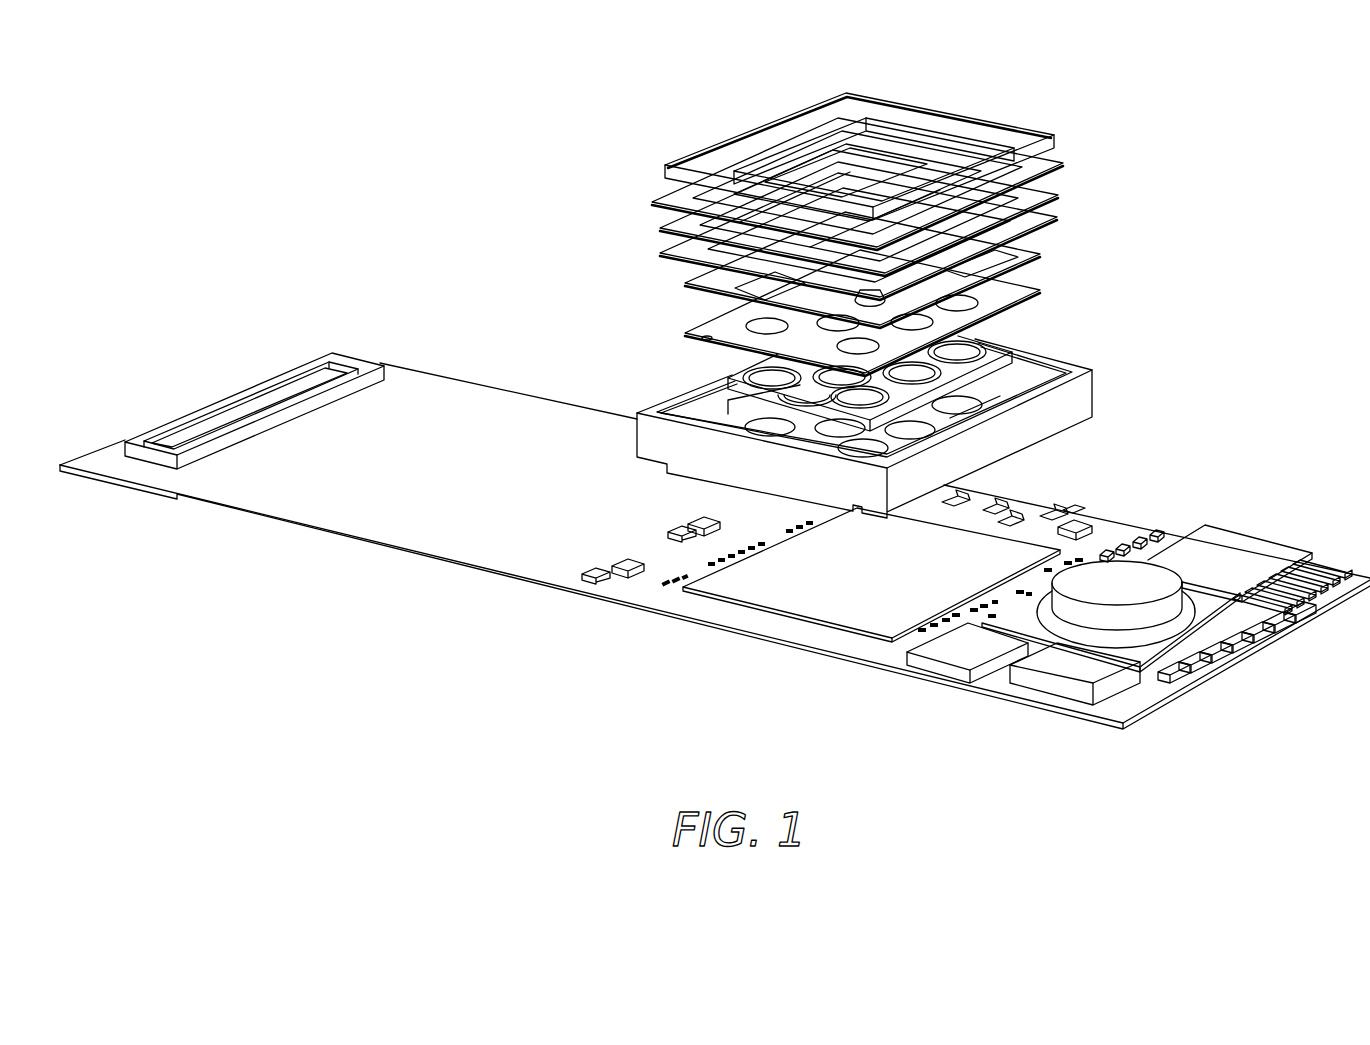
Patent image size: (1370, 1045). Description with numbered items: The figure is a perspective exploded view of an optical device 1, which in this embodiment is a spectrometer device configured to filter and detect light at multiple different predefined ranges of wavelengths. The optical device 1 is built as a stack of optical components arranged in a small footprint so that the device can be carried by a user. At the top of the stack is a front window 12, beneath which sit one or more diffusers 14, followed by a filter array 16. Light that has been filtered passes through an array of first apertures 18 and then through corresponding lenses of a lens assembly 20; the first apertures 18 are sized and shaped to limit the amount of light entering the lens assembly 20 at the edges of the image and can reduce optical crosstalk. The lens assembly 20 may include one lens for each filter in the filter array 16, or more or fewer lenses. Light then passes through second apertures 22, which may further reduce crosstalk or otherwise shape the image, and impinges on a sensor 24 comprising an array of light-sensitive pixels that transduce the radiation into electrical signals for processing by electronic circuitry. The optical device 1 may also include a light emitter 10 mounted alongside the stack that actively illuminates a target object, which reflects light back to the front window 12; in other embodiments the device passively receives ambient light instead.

The optical device 1 is at (1273, 44).
The light emitter 10 is at (1152, 580).
The front window 12 is at (805, 120).
The diffusers 14 is at (1032, 195).
The filter array 16 is at (672, 252).
The first apertures 18 is at (1010, 295).
The lens assembly 20 is at (965, 350).
The second apertures 22 is at (1085, 397).
The sensor 24 is at (1018, 550).